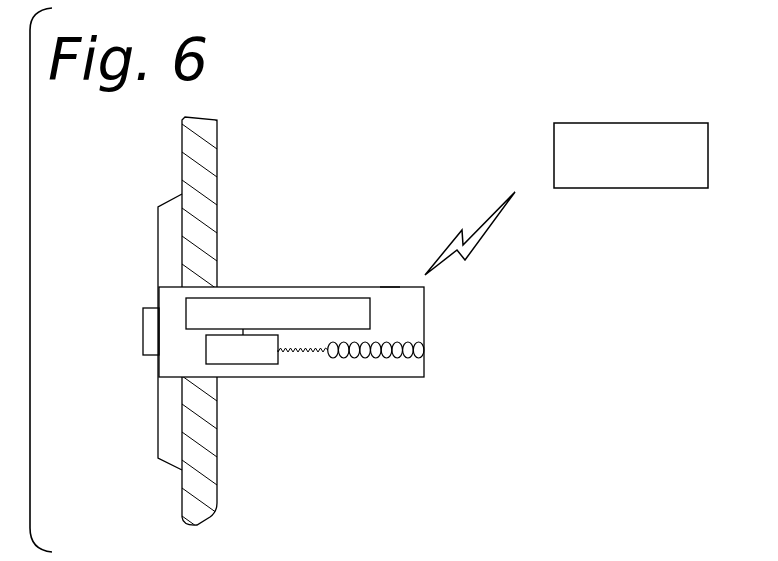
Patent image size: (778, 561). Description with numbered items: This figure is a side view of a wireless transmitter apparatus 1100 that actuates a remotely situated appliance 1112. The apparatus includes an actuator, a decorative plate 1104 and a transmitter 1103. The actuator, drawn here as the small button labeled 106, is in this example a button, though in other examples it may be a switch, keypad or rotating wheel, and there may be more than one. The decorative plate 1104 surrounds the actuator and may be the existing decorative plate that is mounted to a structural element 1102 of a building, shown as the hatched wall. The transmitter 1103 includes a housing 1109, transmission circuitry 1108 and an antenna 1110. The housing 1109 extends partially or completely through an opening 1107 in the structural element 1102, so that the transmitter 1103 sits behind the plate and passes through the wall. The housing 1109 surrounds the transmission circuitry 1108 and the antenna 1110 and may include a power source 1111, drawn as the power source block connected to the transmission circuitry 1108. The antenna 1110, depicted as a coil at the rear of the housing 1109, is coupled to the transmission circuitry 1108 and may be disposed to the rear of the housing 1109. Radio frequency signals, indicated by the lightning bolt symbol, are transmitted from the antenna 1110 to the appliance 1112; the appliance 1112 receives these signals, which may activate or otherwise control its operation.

The wireless transmitter apparatus 1100 is at (90, 173).
The structural element 1102 is at (217, 162).
The decorative plate 1104 is at (158, 242).
The transmitter 1103 is at (273, 284).
The opening 1107 is at (219, 285).
The transmission circuitry 1108 is at (260, 364).
The housing 1109 is at (355, 286).
The antenna 1110 is at (405, 358).
The power source 1111 is at (186, 318).
The switch actuator 106 is at (143, 322).
The appliance 1112 is at (630, 188).